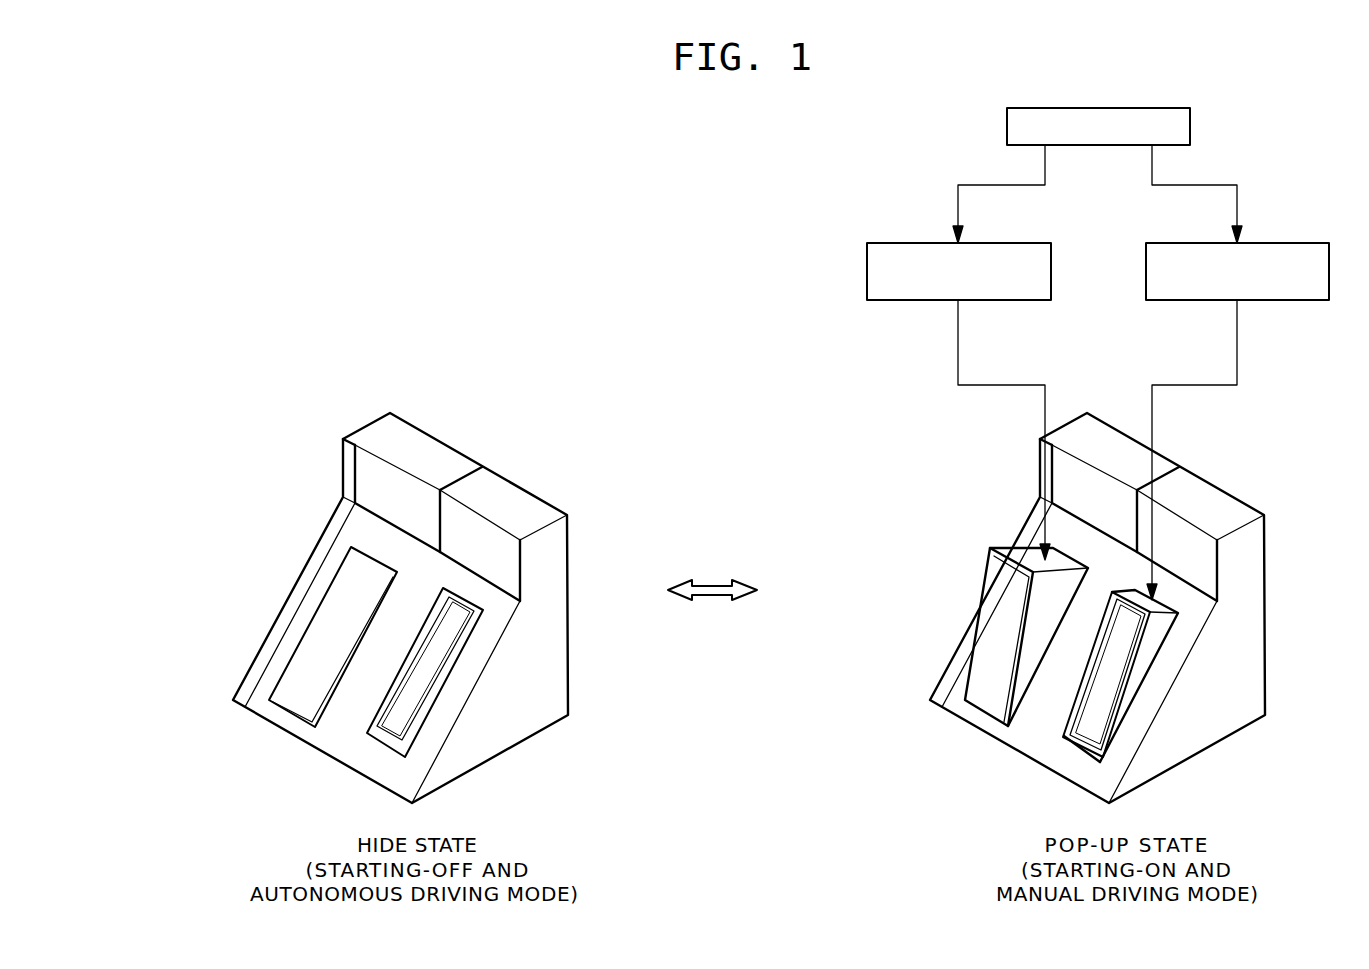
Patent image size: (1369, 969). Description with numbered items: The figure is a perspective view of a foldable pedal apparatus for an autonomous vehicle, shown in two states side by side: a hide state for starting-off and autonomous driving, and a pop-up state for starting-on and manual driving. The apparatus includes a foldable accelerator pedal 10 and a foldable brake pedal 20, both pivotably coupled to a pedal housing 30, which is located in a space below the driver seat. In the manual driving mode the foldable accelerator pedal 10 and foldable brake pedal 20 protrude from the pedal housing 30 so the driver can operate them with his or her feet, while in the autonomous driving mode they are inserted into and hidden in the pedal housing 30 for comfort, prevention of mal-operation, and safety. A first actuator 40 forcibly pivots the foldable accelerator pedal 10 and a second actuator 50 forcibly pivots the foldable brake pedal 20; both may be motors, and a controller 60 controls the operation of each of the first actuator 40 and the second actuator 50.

The foldable accelerator pedal 10 is at (410, 700).
The foldable brake pedal 20 is at (335, 625).
The pedal housing 30 is at (447, 457).
The first actuator 40 is at (1287, 243).
The second actuator 50 is at (908, 243).
The controller 60 is at (1097, 108).